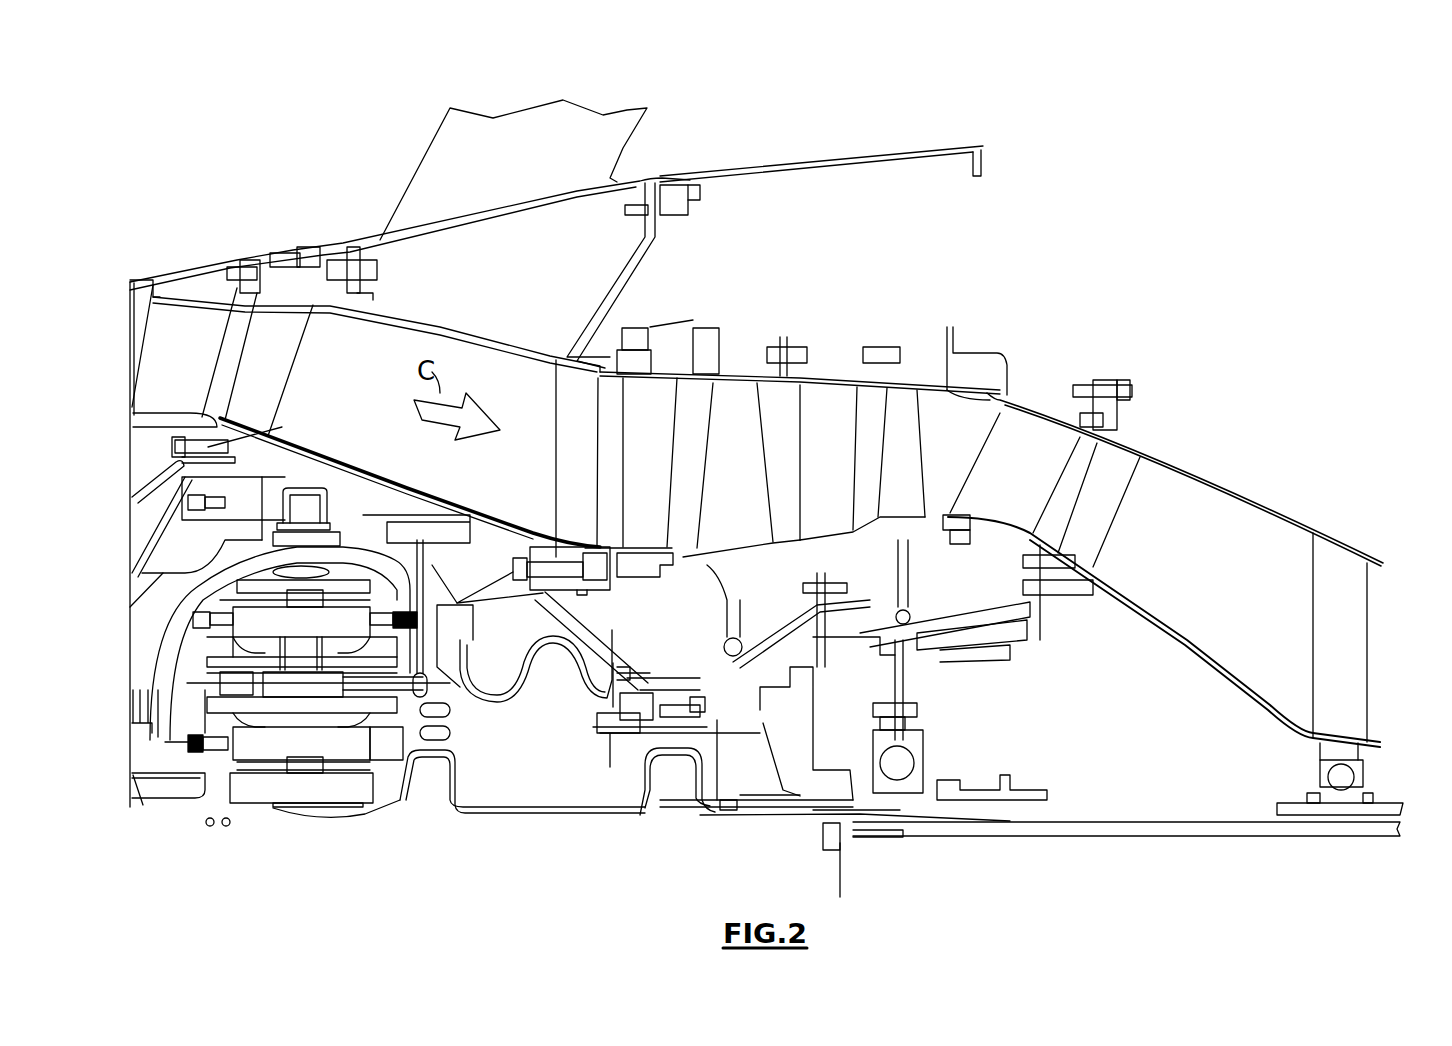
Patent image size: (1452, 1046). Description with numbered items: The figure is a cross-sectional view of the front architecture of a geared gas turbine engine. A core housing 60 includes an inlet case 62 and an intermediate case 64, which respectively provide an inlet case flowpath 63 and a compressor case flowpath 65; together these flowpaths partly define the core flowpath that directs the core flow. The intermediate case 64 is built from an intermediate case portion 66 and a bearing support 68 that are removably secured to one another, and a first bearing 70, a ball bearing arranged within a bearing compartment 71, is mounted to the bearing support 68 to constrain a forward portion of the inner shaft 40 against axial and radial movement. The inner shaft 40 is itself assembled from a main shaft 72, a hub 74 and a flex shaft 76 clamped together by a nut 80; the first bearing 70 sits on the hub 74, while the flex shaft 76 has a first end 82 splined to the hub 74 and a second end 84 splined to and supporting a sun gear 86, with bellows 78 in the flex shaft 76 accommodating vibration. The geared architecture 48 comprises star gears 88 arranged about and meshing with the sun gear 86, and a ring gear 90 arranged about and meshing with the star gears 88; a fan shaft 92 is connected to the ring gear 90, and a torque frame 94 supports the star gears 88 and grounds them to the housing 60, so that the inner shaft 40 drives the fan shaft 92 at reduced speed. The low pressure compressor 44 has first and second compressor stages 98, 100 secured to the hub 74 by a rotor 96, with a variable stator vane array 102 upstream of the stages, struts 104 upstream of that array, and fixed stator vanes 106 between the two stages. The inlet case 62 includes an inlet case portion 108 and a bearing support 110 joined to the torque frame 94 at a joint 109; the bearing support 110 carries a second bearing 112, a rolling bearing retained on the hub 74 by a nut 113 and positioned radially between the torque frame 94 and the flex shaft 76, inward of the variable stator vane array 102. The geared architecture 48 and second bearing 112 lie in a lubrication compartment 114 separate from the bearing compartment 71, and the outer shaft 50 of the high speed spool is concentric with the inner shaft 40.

The inner shaft 40 is at (1142, 838).
The low pressure compressor 44 is at (945, 308).
The geared architecture 48 is at (397, 684).
The outer shaft 50 is at (1392, 795).
The core housing 60 is at (668, 245).
The inlet case 62 is at (466, 325).
The inlet case flowpath 63 is at (478, 491).
The intermediate case 64 is at (1174, 457).
The compressor case flowpath 65 is at (1199, 558).
The intermediate case portion 66 is at (1140, 615).
The bearing support 68 is at (1010, 652).
The first bearing 70 is at (920, 795).
The bearing compartment 71 is at (869, 697).
The main shaft 72 is at (1052, 833).
The hub 74 is at (810, 795).
The flex shaft 76 is at (710, 820).
The bellows 78 is at (645, 767).
The nut 80 is at (870, 840).
The first end 82 is at (818, 812).
The second end 84 is at (335, 810).
The sun gear 86 is at (275, 795).
The star gears 88 is at (275, 720).
The ring gear 90 is at (345, 557).
The fan shaft 92 is at (165, 640).
The torque frame 94 is at (463, 708).
The rotor 96 is at (832, 622).
The first compressor stage 98 is at (742, 362).
The second compressor stage 100 is at (912, 362).
The variable stator vane array 102 is at (662, 378).
The struts 104 is at (540, 385).
The fixed stator vanes 106 is at (828, 400).
The inlet case portion 108 is at (400, 490).
The joint 109 is at (543, 527).
The bearing support 110 is at (615, 632).
The second bearing 112 is at (612, 710).
The nut 113 is at (608, 733).
The lubrication compartment 114 is at (545, 805).